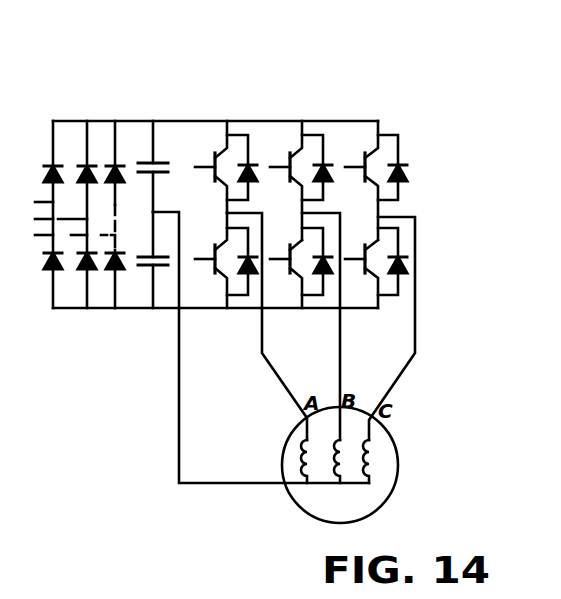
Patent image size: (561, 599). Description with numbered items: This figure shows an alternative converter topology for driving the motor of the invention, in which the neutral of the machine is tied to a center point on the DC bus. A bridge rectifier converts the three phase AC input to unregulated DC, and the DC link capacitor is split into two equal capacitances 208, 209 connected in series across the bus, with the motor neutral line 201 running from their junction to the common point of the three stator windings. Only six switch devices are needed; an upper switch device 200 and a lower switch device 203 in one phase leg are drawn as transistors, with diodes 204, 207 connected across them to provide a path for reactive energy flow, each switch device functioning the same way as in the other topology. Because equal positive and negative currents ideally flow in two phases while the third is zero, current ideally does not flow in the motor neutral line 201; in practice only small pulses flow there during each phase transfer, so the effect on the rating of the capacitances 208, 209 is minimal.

The upper transistor 200 is at (198, 160).
The motor neutral line 201 is at (221, 487).
The lower transistor 203 is at (208, 253).
The upper flyback diode 204 is at (245, 133).
The lower flyback diode 207 is at (245, 275).
The capacitance 208 is at (135, 157).
The capacitance 209 is at (140, 268).